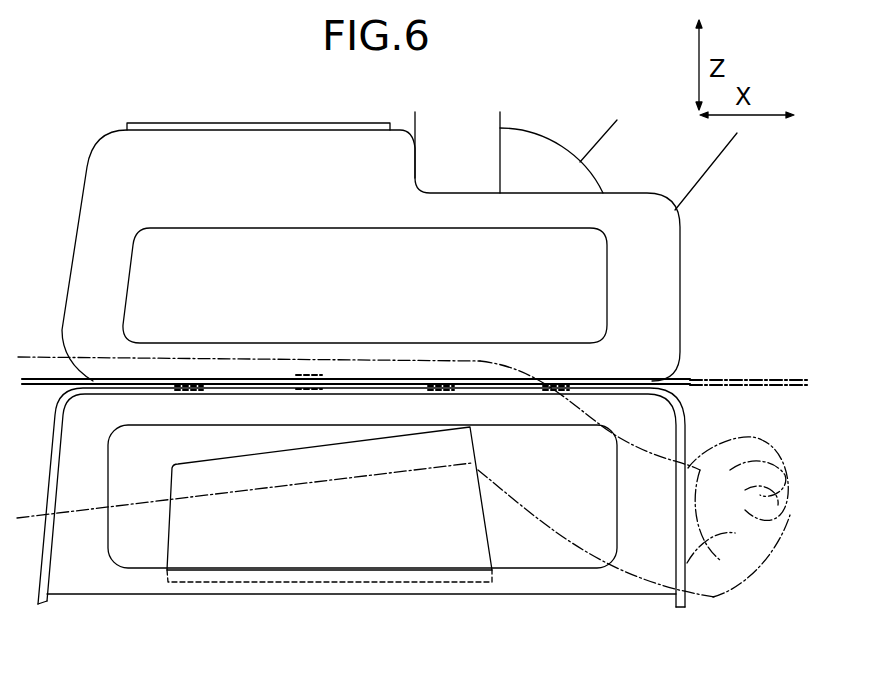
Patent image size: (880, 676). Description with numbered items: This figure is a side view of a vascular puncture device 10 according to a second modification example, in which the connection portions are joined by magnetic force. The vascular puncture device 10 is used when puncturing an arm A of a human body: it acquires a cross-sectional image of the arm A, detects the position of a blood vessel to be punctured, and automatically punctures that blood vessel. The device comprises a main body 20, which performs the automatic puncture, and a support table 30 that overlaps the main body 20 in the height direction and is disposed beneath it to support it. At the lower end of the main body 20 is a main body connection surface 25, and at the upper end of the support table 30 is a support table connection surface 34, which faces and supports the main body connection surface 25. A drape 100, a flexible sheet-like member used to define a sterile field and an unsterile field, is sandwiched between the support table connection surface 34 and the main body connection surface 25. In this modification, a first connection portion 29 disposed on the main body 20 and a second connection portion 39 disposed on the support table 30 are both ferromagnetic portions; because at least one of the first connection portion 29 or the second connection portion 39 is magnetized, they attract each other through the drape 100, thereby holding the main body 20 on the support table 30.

The vascular puncture device 10 is at (71, 95).
The main body 20 is at (683, 278).
The support table 30 is at (690, 562).
The main body connection surface 25 is at (150, 394).
The first connection portion 29 is at (315, 378).
The support table connection surface 34 is at (248, 378).
The second connection portion 39 is at (187, 392).
The drape 100 is at (758, 379).
The arm A is at (243, 500).